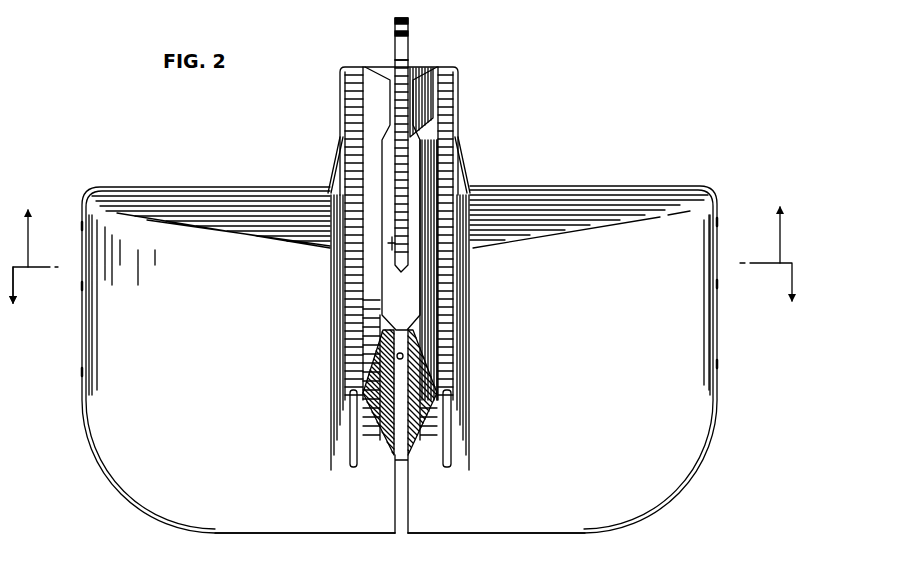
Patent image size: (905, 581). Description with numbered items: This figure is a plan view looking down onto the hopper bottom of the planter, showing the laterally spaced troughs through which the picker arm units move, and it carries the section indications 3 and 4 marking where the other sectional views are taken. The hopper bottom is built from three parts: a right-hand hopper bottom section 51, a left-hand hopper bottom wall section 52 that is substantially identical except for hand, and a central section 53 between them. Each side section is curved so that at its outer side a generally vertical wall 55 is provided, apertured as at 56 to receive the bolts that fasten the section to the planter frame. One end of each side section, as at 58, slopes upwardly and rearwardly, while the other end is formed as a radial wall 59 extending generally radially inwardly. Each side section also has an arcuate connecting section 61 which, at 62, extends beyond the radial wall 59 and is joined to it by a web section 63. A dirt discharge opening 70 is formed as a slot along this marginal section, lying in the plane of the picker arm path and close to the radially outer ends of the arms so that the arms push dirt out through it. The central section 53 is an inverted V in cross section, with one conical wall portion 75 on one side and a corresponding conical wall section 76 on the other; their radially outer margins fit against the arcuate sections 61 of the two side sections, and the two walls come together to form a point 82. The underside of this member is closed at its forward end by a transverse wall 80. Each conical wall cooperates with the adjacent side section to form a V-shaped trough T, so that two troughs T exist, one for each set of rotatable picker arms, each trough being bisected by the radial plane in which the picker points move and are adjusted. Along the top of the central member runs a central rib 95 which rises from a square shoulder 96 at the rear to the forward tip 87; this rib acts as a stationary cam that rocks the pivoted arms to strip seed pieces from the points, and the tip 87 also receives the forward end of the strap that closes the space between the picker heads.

The hopper bottom section 51 is at (108, 178).
The hopper bottom wall section 52 is at (608, 173).
The central section of the hopper bottom wall 53 is at (440, 300).
The wall 55 is at (85, 315).
The apertures 56 is at (82, 285).
The end of the hopper bottom section 58 is at (185, 508).
The radial wall 59 is at (210, 197).
The arcuate connecting section 61 is at (353, 348).
The extension of the arcuate connecting section 62 is at (355, 118).
The web section 63 is at (333, 188).
The dirt discharge opening 70 is at (350, 432).
The conical wall portion 75 is at (430, 275).
The conical wall section 76 is at (370, 287).
The transverse wall 80 is at (420, 68).
The point 82 is at (385, 428).
The forward tip 87 is at (408, 52).
The central rib 95 is at (400, 165).
The square shoulder 96 is at (388, 243).
The trough T is at (357, 322).
The section line 3 is at (394, 231).
The section line 4 is at (402, 286).